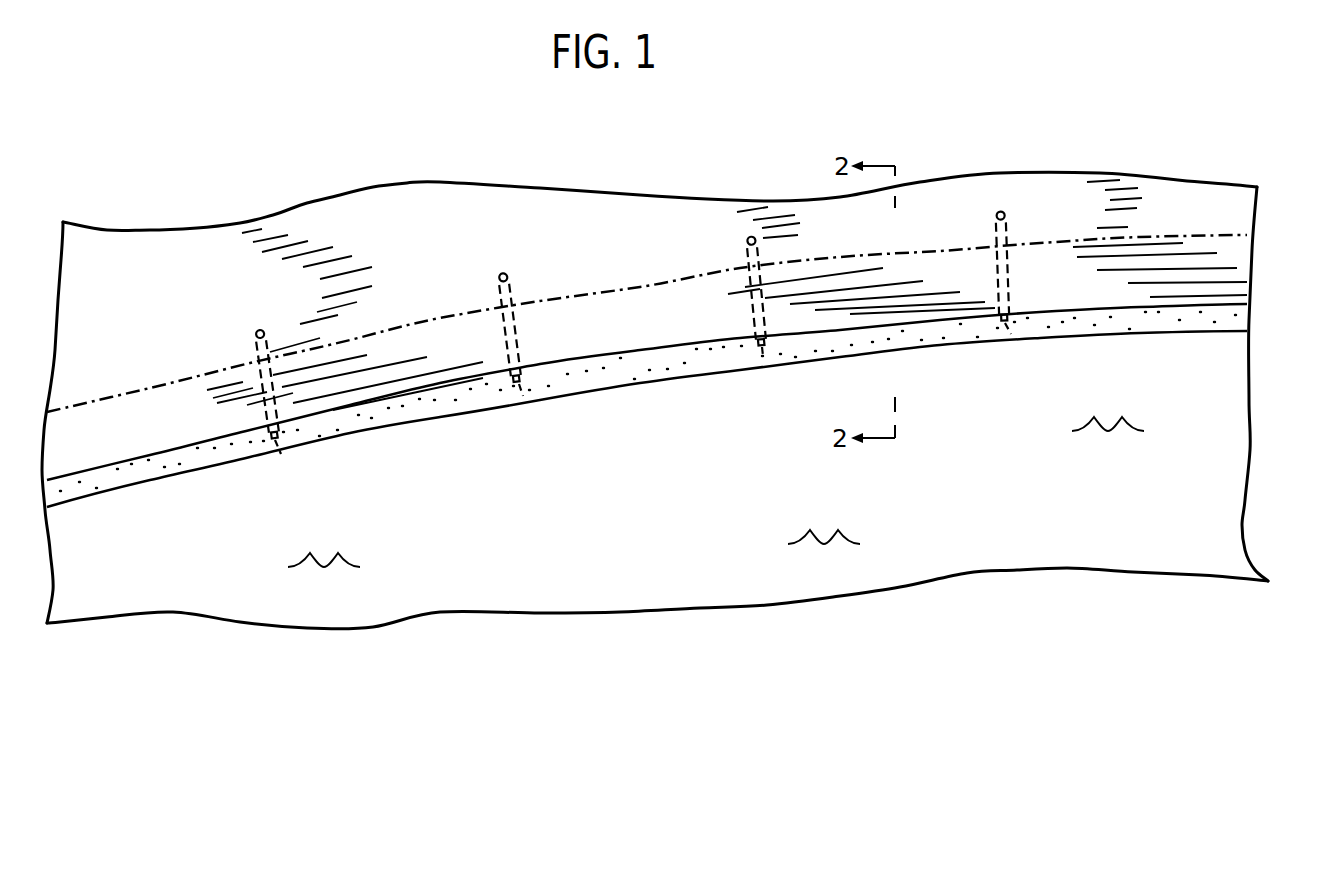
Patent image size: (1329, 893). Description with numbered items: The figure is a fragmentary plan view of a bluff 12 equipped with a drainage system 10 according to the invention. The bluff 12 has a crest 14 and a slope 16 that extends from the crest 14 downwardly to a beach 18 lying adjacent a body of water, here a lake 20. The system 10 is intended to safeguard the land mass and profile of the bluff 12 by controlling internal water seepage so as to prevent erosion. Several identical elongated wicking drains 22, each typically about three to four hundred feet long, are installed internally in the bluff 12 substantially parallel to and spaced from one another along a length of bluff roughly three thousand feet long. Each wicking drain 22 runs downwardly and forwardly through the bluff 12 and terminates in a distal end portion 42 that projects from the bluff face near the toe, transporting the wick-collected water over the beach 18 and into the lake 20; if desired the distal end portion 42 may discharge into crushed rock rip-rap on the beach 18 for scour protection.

The drainage system 10 is at (757, 180).
The bluff 12 is at (956, 198).
The crest 14 is at (1240, 214).
The slope 16 is at (1246, 251).
The beach 18 is at (1217, 316).
The lake 20 is at (1230, 418).
The wicking drain 22 is at (267, 403).
The distal end portion 42 is at (281, 454).